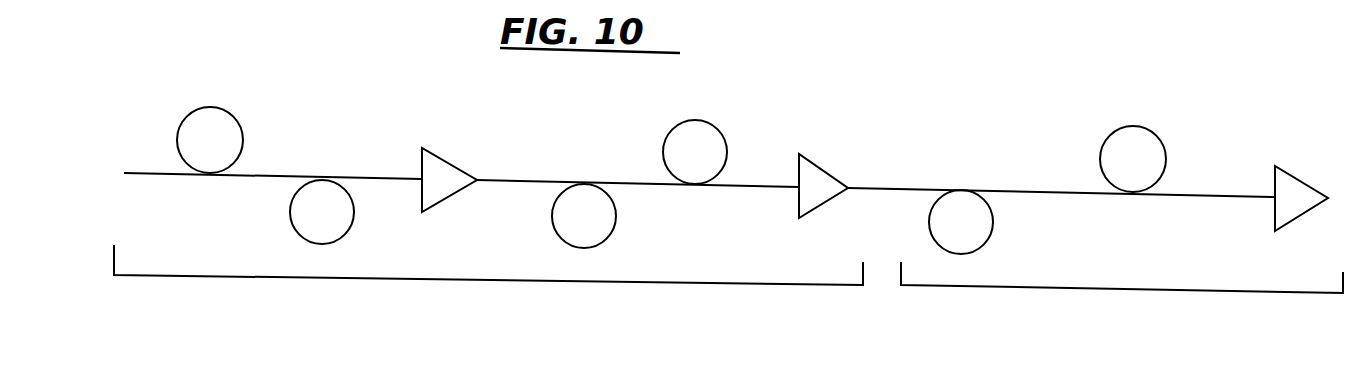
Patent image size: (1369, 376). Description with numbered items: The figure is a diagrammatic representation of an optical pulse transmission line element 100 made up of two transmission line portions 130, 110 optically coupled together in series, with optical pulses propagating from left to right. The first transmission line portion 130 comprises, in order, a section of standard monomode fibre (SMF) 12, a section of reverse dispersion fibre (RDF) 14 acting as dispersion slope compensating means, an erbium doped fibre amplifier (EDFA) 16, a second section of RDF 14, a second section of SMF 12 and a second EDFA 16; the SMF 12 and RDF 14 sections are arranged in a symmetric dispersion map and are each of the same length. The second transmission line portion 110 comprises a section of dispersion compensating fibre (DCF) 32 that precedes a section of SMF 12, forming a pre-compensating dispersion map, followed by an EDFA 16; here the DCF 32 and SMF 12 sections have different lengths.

The transmission line element 100 is at (772, 74).
The standard monomode fibre (SMF) 12 is at (230, 135).
The reverse dispersion fibre (RDF) 14 is at (305, 214).
The erbium doped fibre amplifier (EDFA) 16 is at (440, 167).
The dispersion compensating fibre (DCF) 32 is at (978, 223).
The transmission line portion 130 is at (517, 282).
The transmission line portion 110 is at (1152, 290).